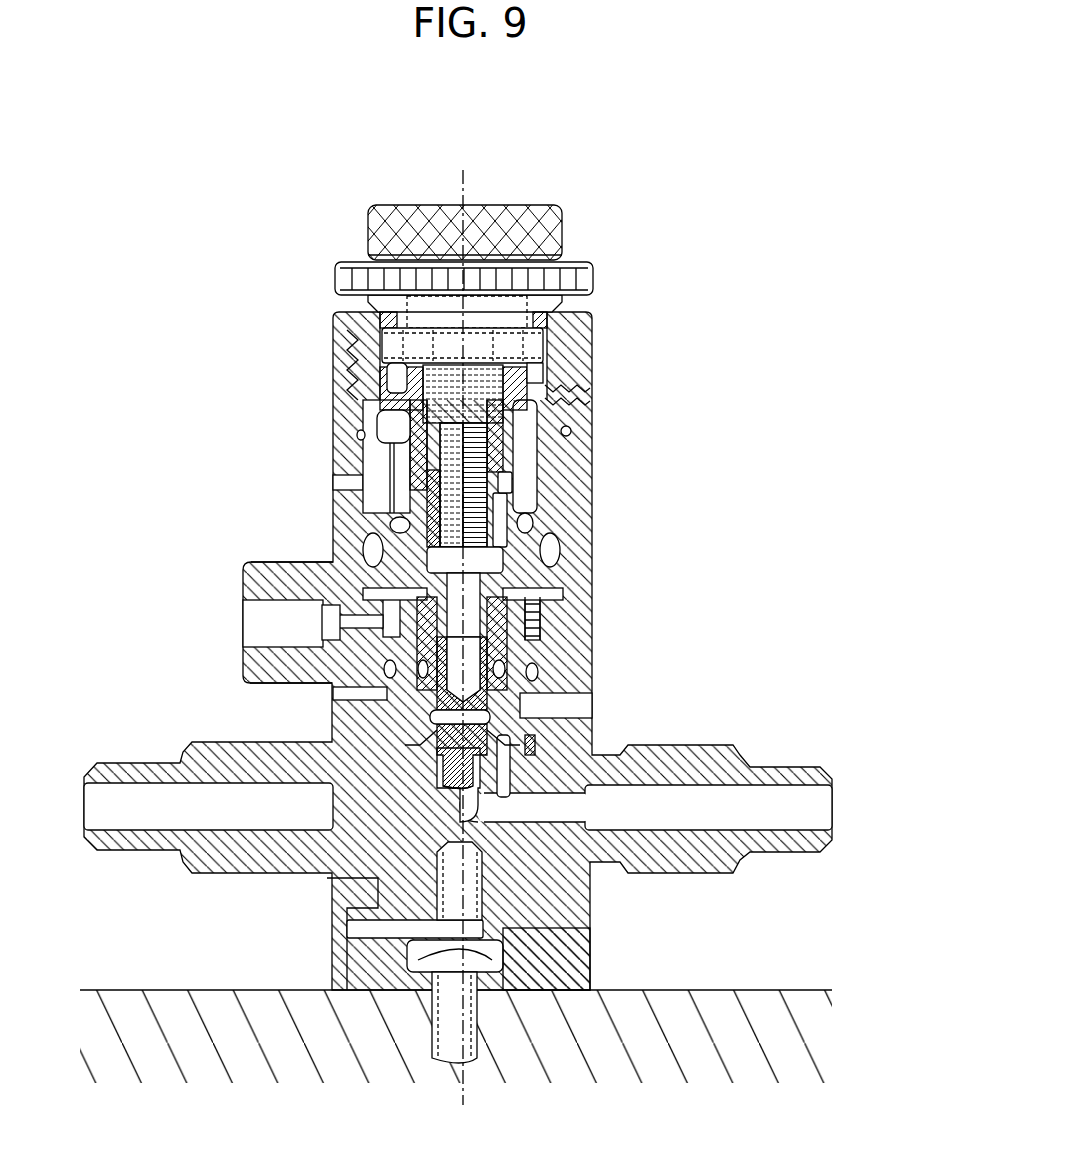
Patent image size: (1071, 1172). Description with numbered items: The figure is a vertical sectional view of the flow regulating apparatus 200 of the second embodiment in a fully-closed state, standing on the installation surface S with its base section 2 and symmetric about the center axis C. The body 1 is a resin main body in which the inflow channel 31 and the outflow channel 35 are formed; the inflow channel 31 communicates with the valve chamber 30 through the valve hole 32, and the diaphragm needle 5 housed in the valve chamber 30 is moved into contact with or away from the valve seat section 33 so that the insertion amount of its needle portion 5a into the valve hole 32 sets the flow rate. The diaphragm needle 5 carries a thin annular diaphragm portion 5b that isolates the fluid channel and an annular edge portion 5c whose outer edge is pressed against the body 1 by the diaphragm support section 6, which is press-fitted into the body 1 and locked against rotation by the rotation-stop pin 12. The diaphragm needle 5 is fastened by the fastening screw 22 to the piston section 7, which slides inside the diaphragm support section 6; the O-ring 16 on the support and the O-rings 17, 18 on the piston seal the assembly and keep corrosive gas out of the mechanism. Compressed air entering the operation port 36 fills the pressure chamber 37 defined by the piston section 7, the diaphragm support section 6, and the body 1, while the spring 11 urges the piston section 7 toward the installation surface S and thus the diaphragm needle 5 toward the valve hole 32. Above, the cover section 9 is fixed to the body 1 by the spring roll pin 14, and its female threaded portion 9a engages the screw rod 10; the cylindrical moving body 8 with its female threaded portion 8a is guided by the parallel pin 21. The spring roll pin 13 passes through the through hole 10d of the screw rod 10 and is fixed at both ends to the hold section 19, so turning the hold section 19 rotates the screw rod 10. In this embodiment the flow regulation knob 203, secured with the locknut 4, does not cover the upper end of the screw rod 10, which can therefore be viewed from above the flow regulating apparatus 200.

The flow regulating apparatus 200 is at (605, 147).
The body 1 is at (592, 652).
The base section 2 is at (583, 955).
The locknut 4 is at (335, 278).
The diaphragm needle 5 is at (427, 773).
The needle portion 5a is at (457, 795).
The diaphragm portion 5b is at (458, 727).
The annular edge portion 5c is at (347, 715).
The diaphragm support section 6 is at (533, 660).
The piston section 7 is at (543, 532).
The moving body 8 is at (497, 480).
The female threaded portion 8a is at (443, 508).
The cover section 9 is at (383, 358).
The female threaded portion 9a is at (430, 453).
The screw rod 10 is at (523, 380).
The through hole 10d is at (477, 317).
The spring 11 is at (400, 415).
The rotation-stop pin 12 is at (572, 708).
The spring roll pin 13 is at (407, 350).
The spring roll pin 14 is at (593, 385).
The O-ring 16 is at (390, 680).
The O-ring 17 is at (423, 665).
The O-ring 18 is at (552, 552).
The hold section 19 is at (503, 230).
The parallel pin 21 is at (503, 513).
The fastening screw 22 is at (467, 585).
The valve chamber 30 is at (500, 738).
The inflow channel 31 is at (125, 808).
The valve hole 32 is at (500, 805).
The valve seat section 33 is at (427, 760).
The outflow channel 35 is at (775, 822).
The operation port 36 is at (265, 622).
The pressure chamber 37 is at (377, 590).
The flow regulation knob 203 is at (368, 232).
The installation surface S is at (456, 1036).
The center axis C is at (472, 639).